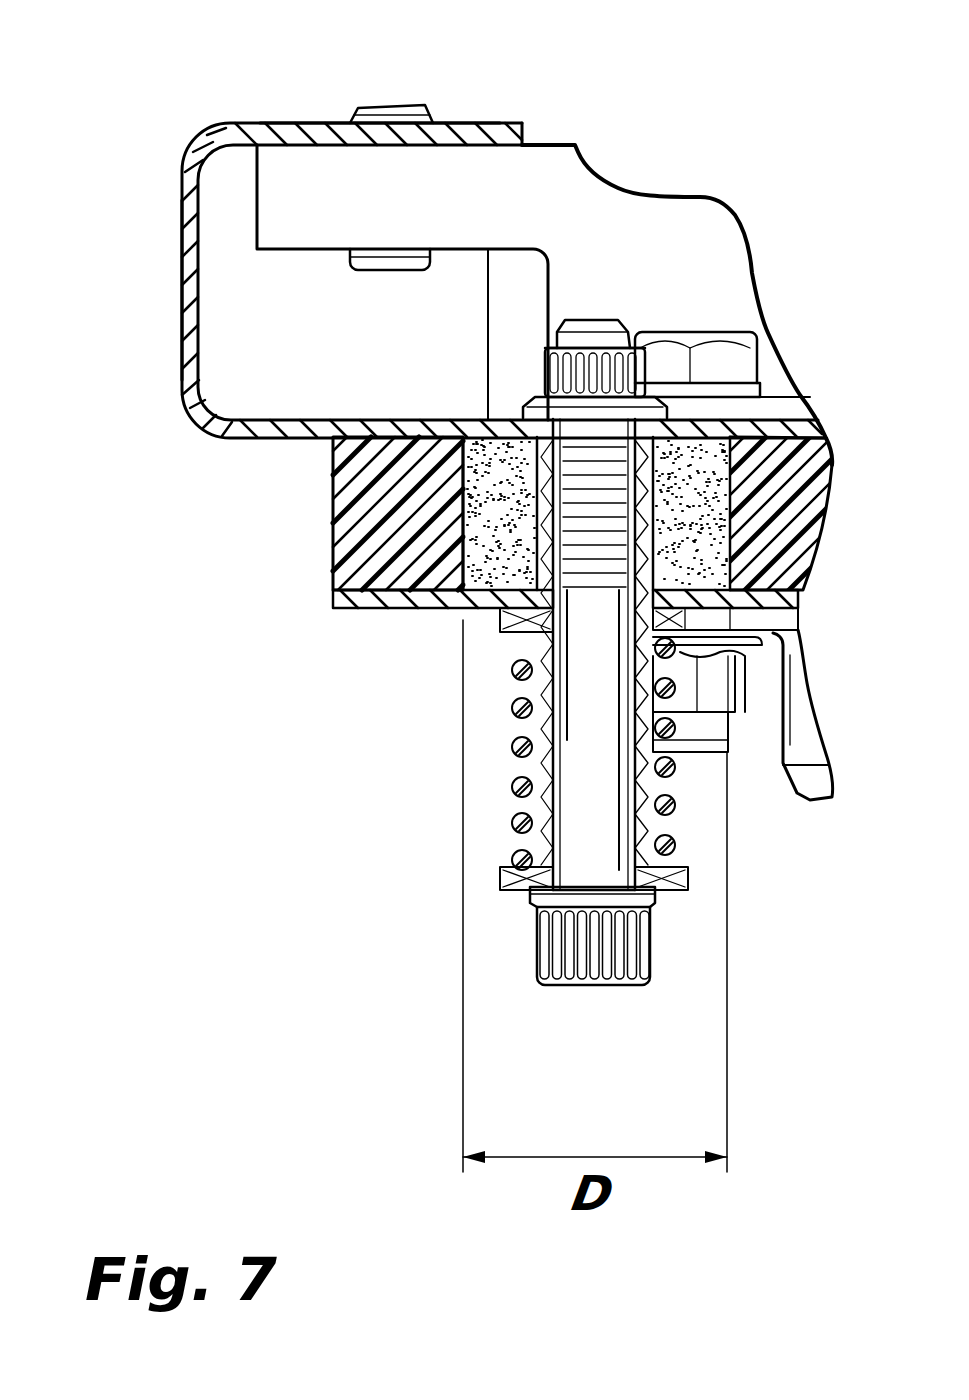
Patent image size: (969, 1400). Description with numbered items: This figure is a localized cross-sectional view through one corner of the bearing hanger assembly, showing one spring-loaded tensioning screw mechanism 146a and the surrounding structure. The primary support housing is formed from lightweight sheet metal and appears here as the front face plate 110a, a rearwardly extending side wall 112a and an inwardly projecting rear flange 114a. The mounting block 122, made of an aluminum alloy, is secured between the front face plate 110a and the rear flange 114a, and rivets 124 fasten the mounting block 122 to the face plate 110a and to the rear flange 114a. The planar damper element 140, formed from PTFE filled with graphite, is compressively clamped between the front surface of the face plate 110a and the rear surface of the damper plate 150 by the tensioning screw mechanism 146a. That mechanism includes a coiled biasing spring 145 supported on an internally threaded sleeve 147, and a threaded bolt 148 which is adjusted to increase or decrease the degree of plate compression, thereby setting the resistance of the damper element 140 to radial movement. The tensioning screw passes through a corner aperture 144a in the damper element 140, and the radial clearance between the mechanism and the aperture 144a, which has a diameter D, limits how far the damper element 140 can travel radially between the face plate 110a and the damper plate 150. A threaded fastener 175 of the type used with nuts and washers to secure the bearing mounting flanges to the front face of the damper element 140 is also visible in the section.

The front face plate 110a is at (238, 448).
The side wall 112a is at (182, 312).
The rear flange 114a is at (245, 145).
The mounting block 122 is at (602, 197).
The rivet 124 is at (397, 108).
The damper element 140 is at (345, 527).
The corner aperture 144a is at (483, 452).
The coiled biasing spring 145 is at (520, 785).
The tensioning screw mechanism 146a is at (697, 833).
The internally threaded sleeve 147 is at (603, 988).
The threaded bolt 148 is at (598, 342).
The damper plate 150 is at (345, 612).
The fastener 175 is at (722, 357).